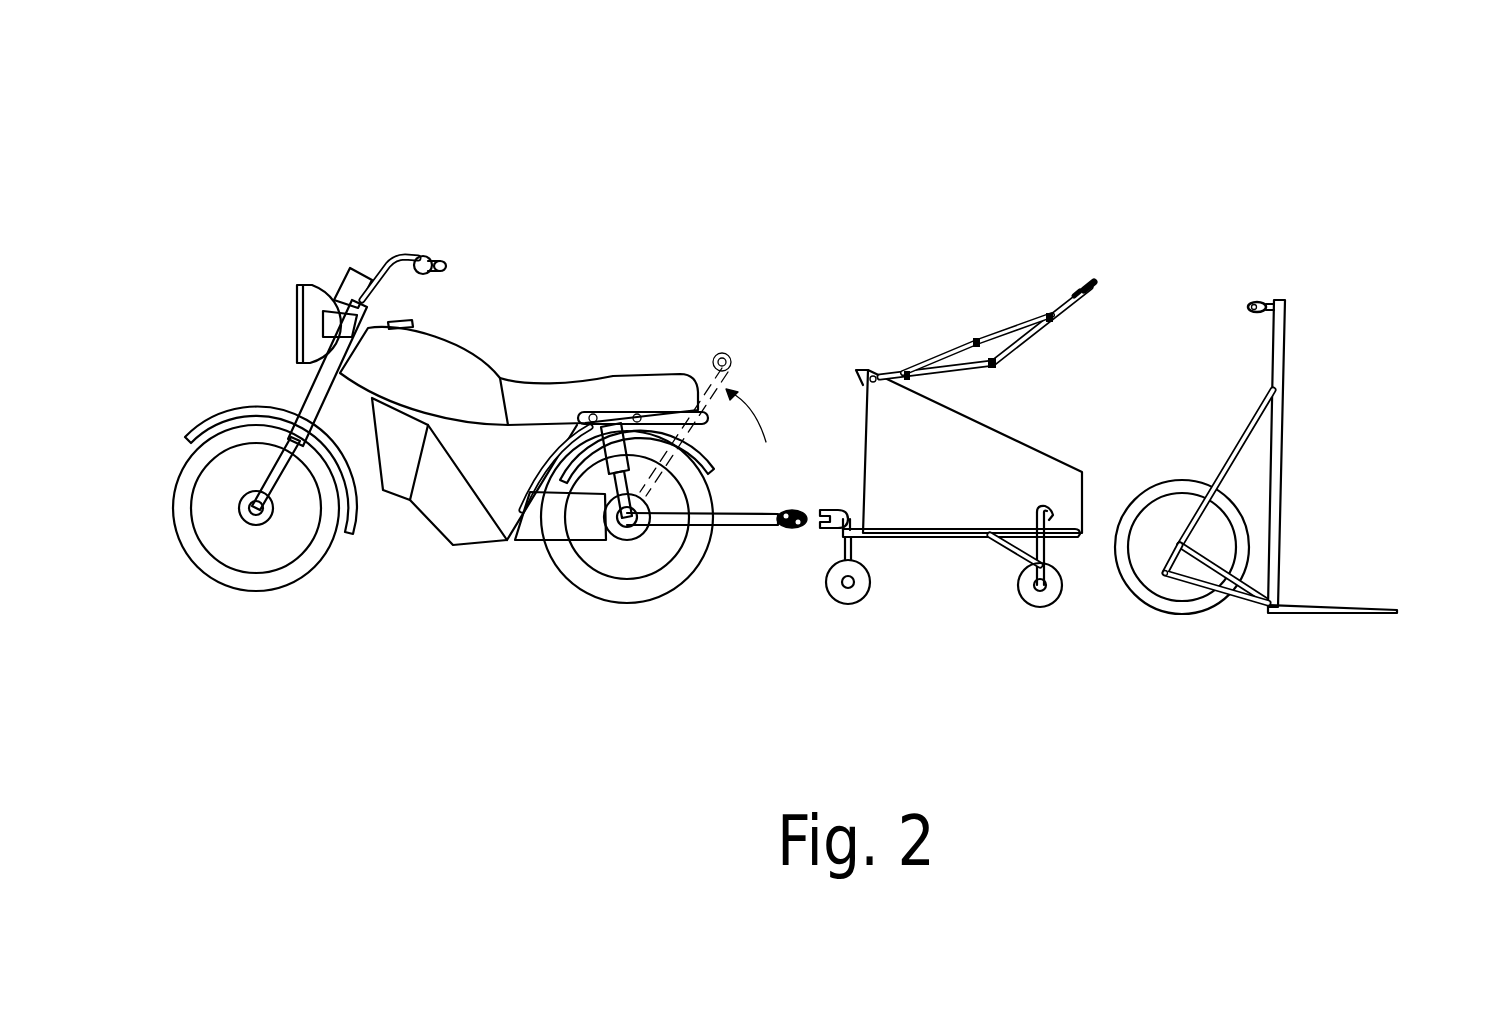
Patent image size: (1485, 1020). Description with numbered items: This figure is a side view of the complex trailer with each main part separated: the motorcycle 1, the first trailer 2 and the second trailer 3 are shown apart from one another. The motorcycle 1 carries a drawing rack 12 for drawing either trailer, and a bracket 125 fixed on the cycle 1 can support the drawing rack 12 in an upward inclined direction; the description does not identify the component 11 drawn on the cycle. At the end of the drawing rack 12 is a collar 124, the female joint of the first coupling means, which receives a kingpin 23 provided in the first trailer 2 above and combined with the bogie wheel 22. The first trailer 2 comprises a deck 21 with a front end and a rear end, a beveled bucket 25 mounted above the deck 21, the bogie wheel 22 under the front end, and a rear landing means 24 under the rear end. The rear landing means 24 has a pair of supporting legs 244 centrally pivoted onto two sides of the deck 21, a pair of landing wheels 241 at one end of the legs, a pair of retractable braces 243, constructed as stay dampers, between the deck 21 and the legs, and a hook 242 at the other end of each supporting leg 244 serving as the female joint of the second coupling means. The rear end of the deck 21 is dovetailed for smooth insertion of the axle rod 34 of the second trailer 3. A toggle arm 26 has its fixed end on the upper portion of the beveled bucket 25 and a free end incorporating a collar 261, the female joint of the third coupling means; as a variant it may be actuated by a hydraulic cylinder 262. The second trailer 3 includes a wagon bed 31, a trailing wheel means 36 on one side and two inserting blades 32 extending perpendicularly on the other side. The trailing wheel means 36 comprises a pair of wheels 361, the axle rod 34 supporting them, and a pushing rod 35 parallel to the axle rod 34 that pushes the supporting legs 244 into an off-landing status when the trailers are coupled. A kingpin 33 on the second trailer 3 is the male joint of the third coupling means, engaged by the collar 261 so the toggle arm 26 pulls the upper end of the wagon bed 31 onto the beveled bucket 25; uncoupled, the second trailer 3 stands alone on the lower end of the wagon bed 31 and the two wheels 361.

The motorcycle 1 is at (568, 300).
The rear wheel 11 is at (600, 586).
The drawing rack 12 is at (736, 528).
The collar 124 is at (794, 535).
The bracket 125 is at (653, 412).
The first trailer 2 is at (979, 262).
The deck 21 is at (930, 540).
The bogie wheel 22 is at (850, 602).
The kingpin 23 is at (826, 508).
The rear landing means 24 is at (1033, 518).
The landing wheels 241 is at (1042, 607).
The hook 242 is at (1058, 540).
The retractable braces 243 is at (1003, 548).
The supporting legs 244 is at (1057, 553).
The beveled bucket 25 is at (906, 420).
The toggle arm 26 is at (996, 352).
The collar 261 is at (1091, 288).
The hydraulic cylinder 262 is at (968, 340).
The second trailer 3 is at (1265, 240).
The wagon bed 31 is at (1284, 318).
The inserting blades 32 is at (1352, 607).
The kingpin 33 is at (1256, 302).
The axle rod 34 is at (1183, 540).
The pushing rod 35 is at (1163, 576).
The trailing wheel means 36 is at (1230, 412).
The wheels 361 is at (1241, 520).